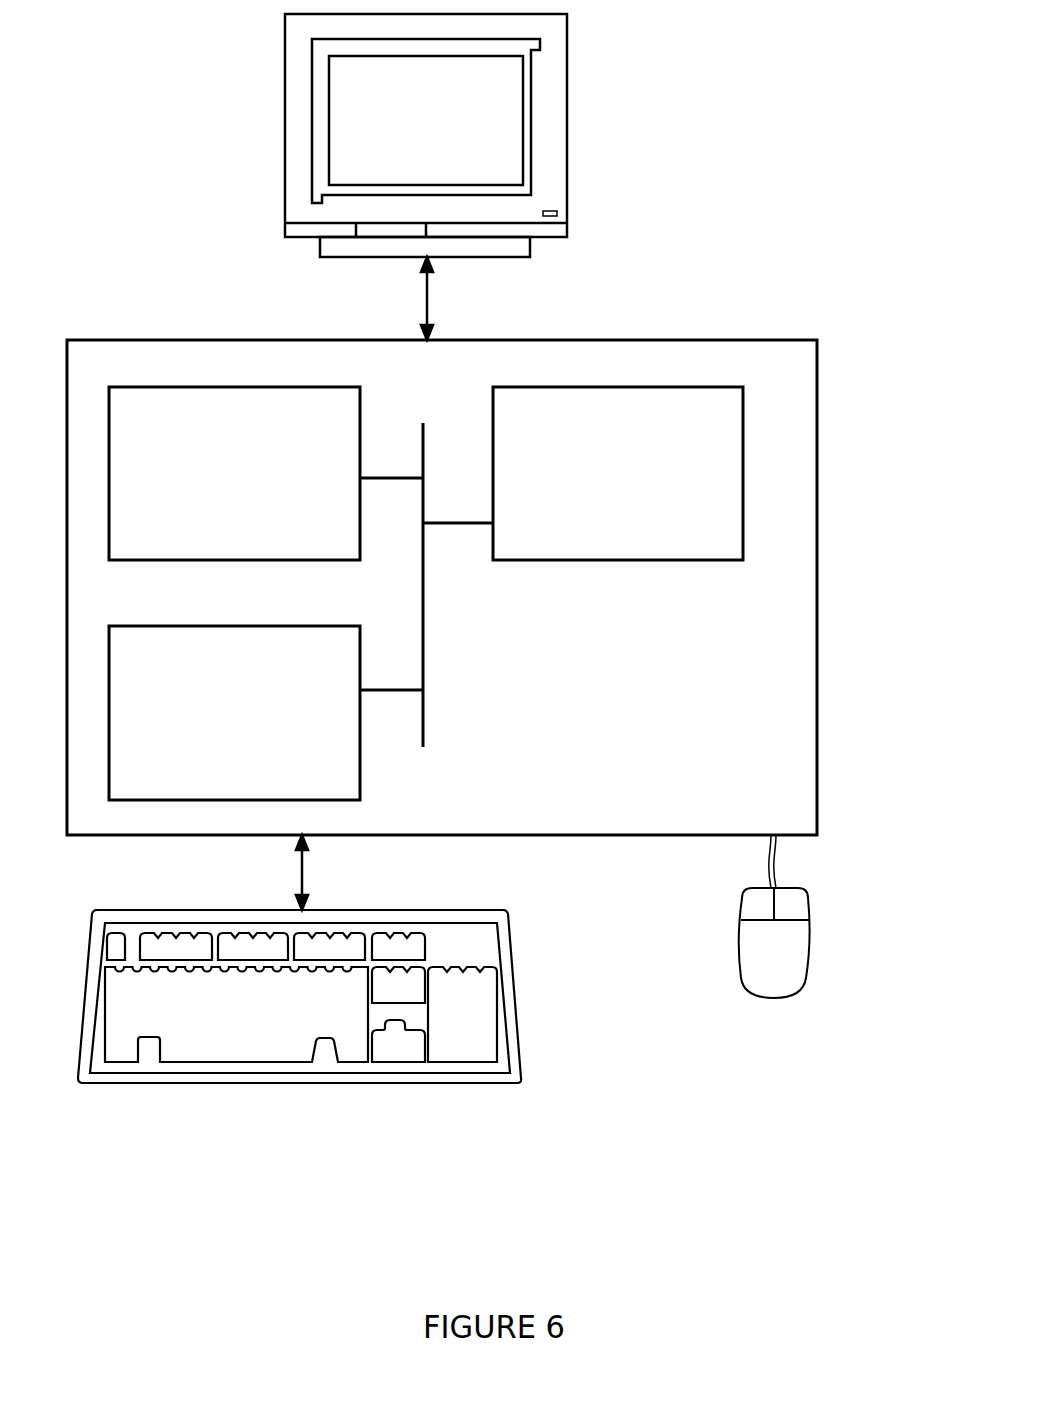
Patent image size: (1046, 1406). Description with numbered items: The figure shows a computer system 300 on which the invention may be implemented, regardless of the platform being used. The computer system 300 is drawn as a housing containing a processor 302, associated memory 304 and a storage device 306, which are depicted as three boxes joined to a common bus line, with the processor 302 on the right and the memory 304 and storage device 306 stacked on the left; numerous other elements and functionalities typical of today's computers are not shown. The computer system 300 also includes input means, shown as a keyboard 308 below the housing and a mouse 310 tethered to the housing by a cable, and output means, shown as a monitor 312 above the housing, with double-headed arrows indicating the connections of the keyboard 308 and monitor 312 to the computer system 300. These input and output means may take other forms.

The computer system 300 is at (838, 181).
The processor 302 is at (660, 484).
The memory 304 is at (259, 484).
The storage device 306 is at (255, 724).
The keyboard 308 is at (250, 1037).
The mouse 310 is at (798, 966).
The monitor 312 is at (447, 139).